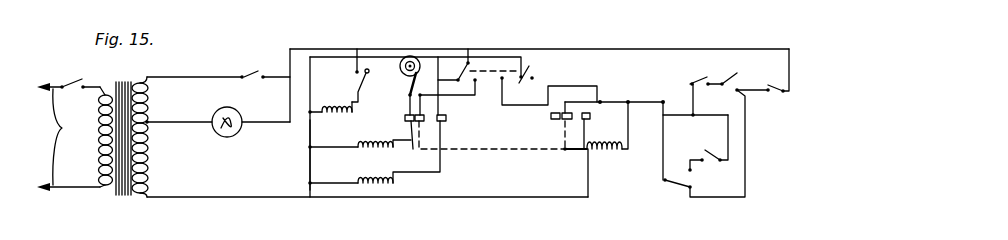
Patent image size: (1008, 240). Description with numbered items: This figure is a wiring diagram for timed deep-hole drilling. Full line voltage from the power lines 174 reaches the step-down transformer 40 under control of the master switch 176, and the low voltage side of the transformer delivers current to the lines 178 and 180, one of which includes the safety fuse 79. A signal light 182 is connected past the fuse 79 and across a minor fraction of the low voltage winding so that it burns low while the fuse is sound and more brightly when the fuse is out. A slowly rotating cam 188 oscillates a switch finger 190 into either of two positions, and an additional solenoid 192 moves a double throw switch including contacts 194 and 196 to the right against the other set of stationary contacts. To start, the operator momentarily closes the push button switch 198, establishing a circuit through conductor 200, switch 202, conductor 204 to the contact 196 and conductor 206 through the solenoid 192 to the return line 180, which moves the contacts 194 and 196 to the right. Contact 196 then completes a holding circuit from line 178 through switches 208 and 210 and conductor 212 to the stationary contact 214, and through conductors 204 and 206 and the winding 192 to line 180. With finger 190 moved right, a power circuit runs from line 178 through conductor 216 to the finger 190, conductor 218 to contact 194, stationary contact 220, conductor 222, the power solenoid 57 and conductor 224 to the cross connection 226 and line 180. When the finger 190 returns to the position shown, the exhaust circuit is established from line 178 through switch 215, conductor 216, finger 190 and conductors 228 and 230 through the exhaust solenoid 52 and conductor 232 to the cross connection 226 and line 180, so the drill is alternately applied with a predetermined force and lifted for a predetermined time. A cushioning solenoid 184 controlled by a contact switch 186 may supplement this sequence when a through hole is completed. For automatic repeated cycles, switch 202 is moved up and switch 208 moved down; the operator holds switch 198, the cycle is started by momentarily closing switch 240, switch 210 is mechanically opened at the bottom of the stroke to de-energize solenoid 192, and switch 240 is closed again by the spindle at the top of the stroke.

The master switch 176 is at (67, 84).
The power lines 174 is at (47, 137).
The step-down transformer 40 is at (123, 197).
The line 178 is at (195, 77).
The safety fuse 79 is at (252, 73).
The signal light 182 is at (220, 135).
The line 180 is at (245, 198).
The contact switch 186 is at (365, 66).
The cushioning solenoid 184 is at (330, 97).
The conductor 232 is at (325, 146).
The cross connection 226 is at (310, 157).
The conductor 224 is at (333, 175).
The exhaust solenoid 52 is at (366, 147).
The power solenoid 57 is at (394, 184).
The conductor 222 is at (440, 176).
The slowly rotating cam 188 is at (408, 55).
The switch 190 is at (394, 84).
The conductor 228 is at (408, 100).
The conductor 218 is at (426, 102).
The conductor 216 is at (438, 57).
The switch 215 is at (469, 62).
The contact 194 is at (426, 121).
The stationary contact 220 is at (445, 120).
The conductor 230 is at (482, 146).
The conductor 204 is at (643, 102).
The contact 196 is at (556, 120).
The stationary contact 214 is at (587, 121).
The solenoid 192 is at (602, 158).
The conductor 206 is at (628, 128).
The conductor 212 is at (675, 115).
The switch 202 is at (680, 178).
The switch 240 is at (712, 165).
The conductor 200 is at (745, 188).
The switch 210 is at (700, 77).
The switch 208 is at (723, 82).
The push button switch 198 is at (780, 93).